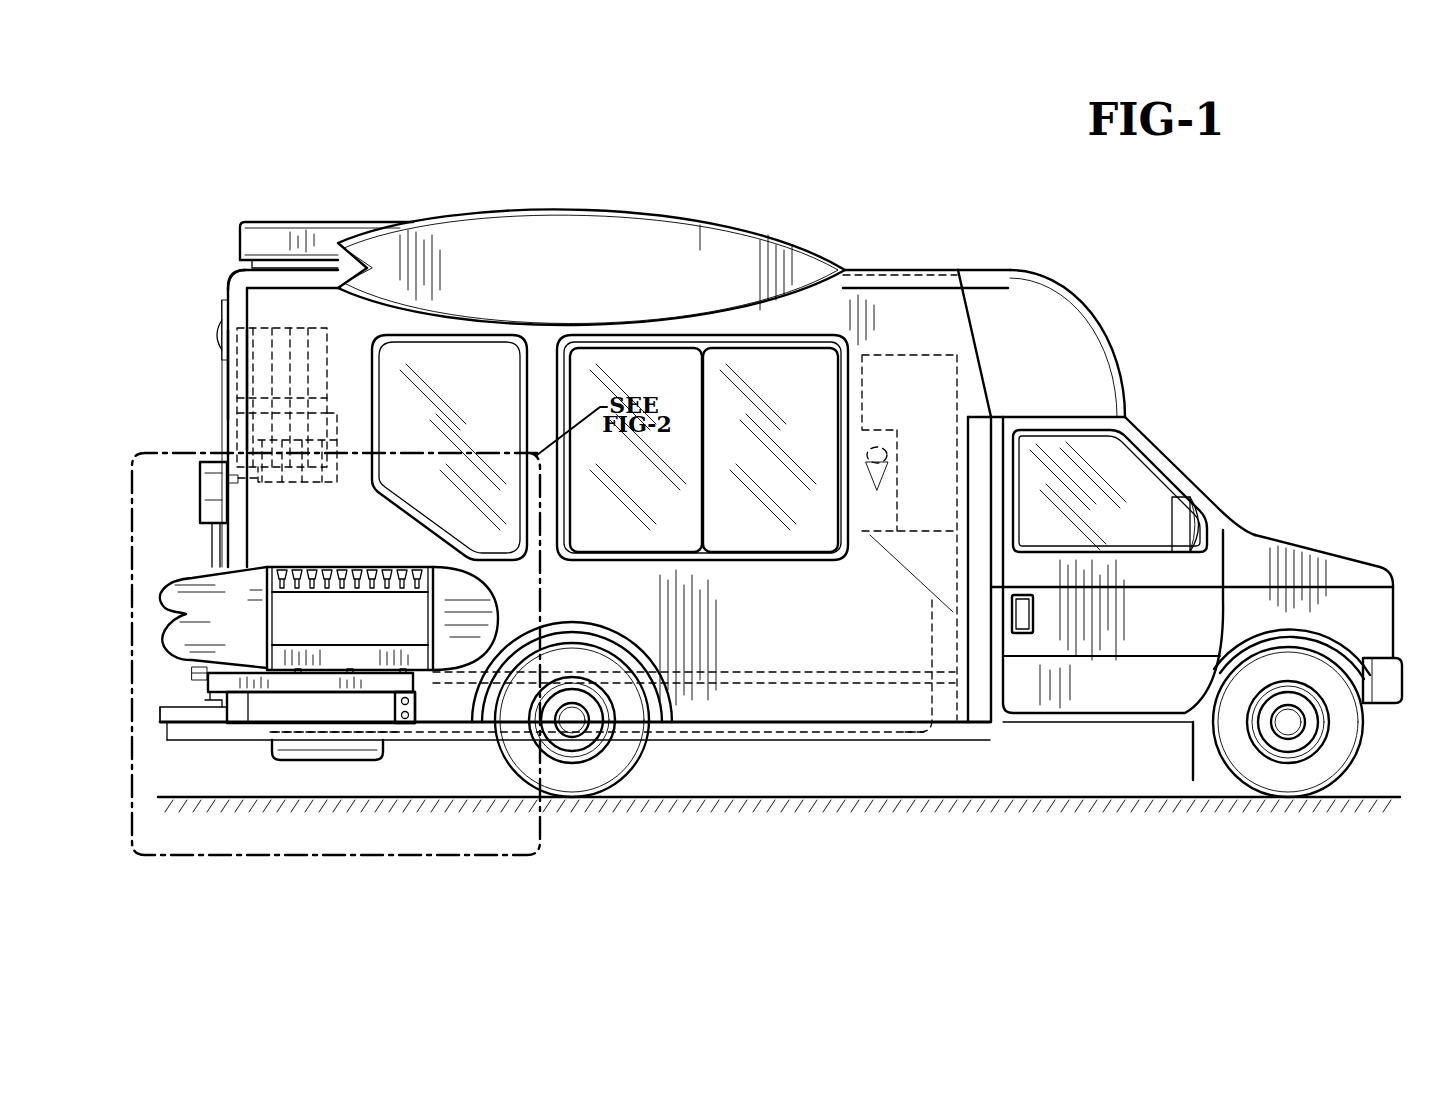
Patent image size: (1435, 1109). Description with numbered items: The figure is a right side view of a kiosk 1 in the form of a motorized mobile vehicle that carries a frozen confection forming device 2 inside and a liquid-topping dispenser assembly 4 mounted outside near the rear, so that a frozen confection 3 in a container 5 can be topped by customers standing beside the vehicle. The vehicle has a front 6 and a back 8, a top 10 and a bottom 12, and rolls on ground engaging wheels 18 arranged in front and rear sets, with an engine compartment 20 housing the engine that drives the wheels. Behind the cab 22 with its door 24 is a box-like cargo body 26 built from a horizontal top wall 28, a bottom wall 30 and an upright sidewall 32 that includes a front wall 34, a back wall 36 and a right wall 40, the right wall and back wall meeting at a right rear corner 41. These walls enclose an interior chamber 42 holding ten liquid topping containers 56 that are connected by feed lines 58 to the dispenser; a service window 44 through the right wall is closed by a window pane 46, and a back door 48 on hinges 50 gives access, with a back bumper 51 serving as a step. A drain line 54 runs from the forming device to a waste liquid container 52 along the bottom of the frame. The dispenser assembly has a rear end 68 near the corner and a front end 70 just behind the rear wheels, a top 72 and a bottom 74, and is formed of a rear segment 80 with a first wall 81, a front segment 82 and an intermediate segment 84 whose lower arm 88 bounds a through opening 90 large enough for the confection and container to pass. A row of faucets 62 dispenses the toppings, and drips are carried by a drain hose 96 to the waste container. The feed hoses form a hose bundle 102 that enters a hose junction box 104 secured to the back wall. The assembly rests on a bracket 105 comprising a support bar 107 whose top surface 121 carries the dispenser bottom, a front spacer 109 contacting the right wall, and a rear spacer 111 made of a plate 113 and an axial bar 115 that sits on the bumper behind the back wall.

The kiosk 1 is at (1103, 257).
The frozen confection forming device 2 is at (940, 378).
The frozen confection 3 is at (841, 463).
The liquid-topping dispenser assembly 4 is at (373, 575).
The container 5 is at (878, 450).
The front 6 is at (1388, 556).
The back 8 is at (213, 246).
The top 10 is at (855, 244).
The bottom 12 is at (667, 768).
The ground engaging wheels 18 is at (572, 780).
The engine compartment 20 is at (1298, 542).
The cab 22 is at (1166, 443).
The door 24 is at (1132, 693).
The cargo body 26 is at (922, 320).
The top wall 28 is at (906, 268).
The bottom wall 30 is at (863, 677).
The sidewall 32 is at (713, 679).
The front wall 34 is at (972, 408).
The back wall 36 is at (226, 398).
The right wall 40 is at (737, 694).
The right rear corner 41 is at (243, 303).
The interior chamber 42 is at (858, 640).
The service window 44 is at (648, 526).
The window pane 46 is at (615, 522).
The back door 48 is at (222, 372).
The hinges 50 is at (216, 325).
The back bumper 51 is at (180, 722).
The waste liquid container 52 is at (370, 760).
The drain line 54 is at (912, 738).
The liquid topping containers 56 is at (283, 368).
The feed lines 58 is at (258, 478).
The faucets 62 is at (331, 566).
The rear end 68 is at (212, 573).
The front end 70 is at (402, 579).
The top 72 is at (350, 539).
The bottom 74 is at (421, 673).
The rear segment 80 is at (212, 573).
The first wall 81 is at (212, 573).
The front segment 82 is at (467, 575).
The intermediate segment 84 is at (335, 733).
The lower arm 88 is at (342, 676).
The through opening 90 is at (298, 615).
The drain hose 96 is at (206, 674).
The hose bundle 102 is at (216, 541).
The hose junction box 104 is at (200, 489).
The bracket 105 is at (319, 742).
The support bar 107 is at (272, 694).
The front spacer 109 is at (412, 715).
The rear spacer 111 is at (212, 777).
The plate 113 is at (212, 720).
The axial bar 115 is at (222, 706).
The top surface 121 is at (366, 672).